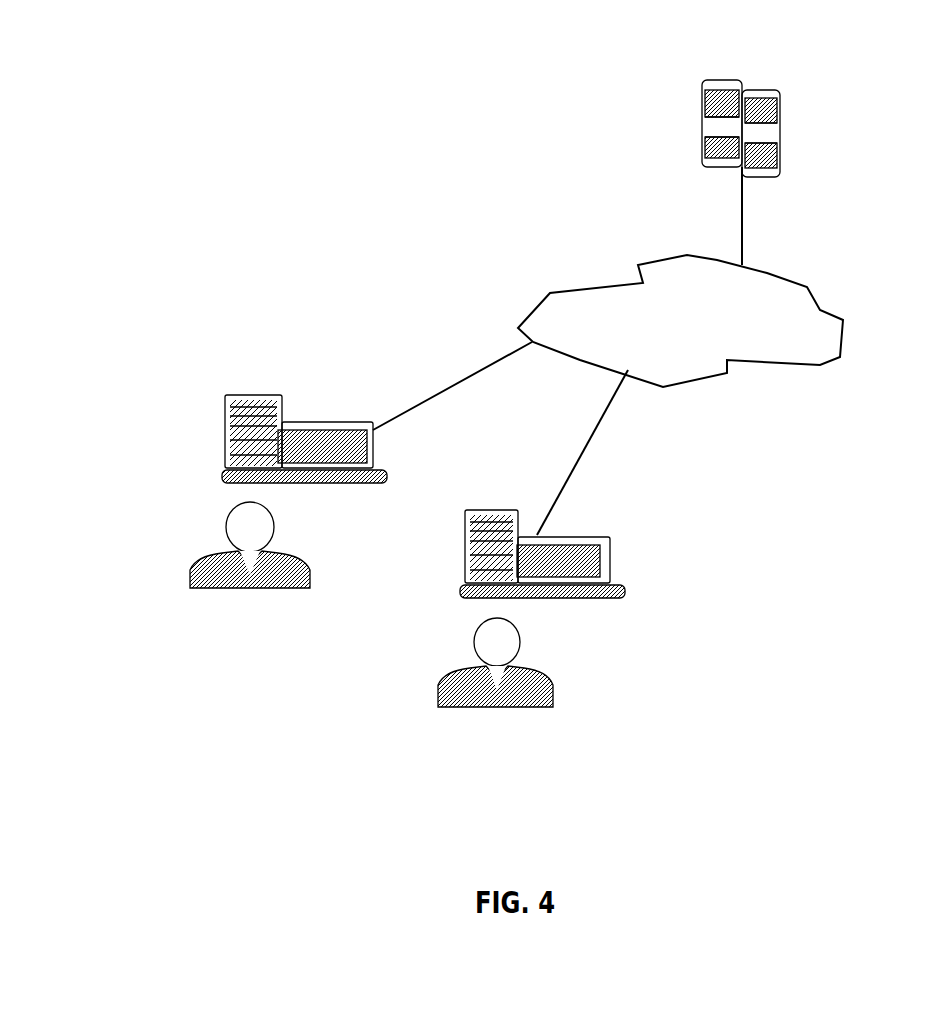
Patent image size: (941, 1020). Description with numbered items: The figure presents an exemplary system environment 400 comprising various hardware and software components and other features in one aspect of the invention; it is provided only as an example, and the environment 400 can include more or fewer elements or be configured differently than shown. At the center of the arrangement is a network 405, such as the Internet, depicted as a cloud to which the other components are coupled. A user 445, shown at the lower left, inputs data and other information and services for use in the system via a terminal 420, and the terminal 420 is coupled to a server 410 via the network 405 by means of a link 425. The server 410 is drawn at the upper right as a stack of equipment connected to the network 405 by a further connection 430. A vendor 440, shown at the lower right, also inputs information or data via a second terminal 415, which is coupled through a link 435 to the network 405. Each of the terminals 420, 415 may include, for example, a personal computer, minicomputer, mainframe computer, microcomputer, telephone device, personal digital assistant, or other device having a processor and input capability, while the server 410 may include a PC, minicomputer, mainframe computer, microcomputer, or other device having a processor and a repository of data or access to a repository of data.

The system environment 400 is at (267, 108).
The network 405 is at (638, 282).
The server 410 is at (777, 88).
The terminal 415 is at (610, 562).
The terminal 420 is at (225, 395).
The link 425 is at (452, 382).
The network connection 430 is at (740, 212).
The link 435 is at (593, 446).
The vendor 440 is at (555, 685).
The user 445 is at (215, 553).